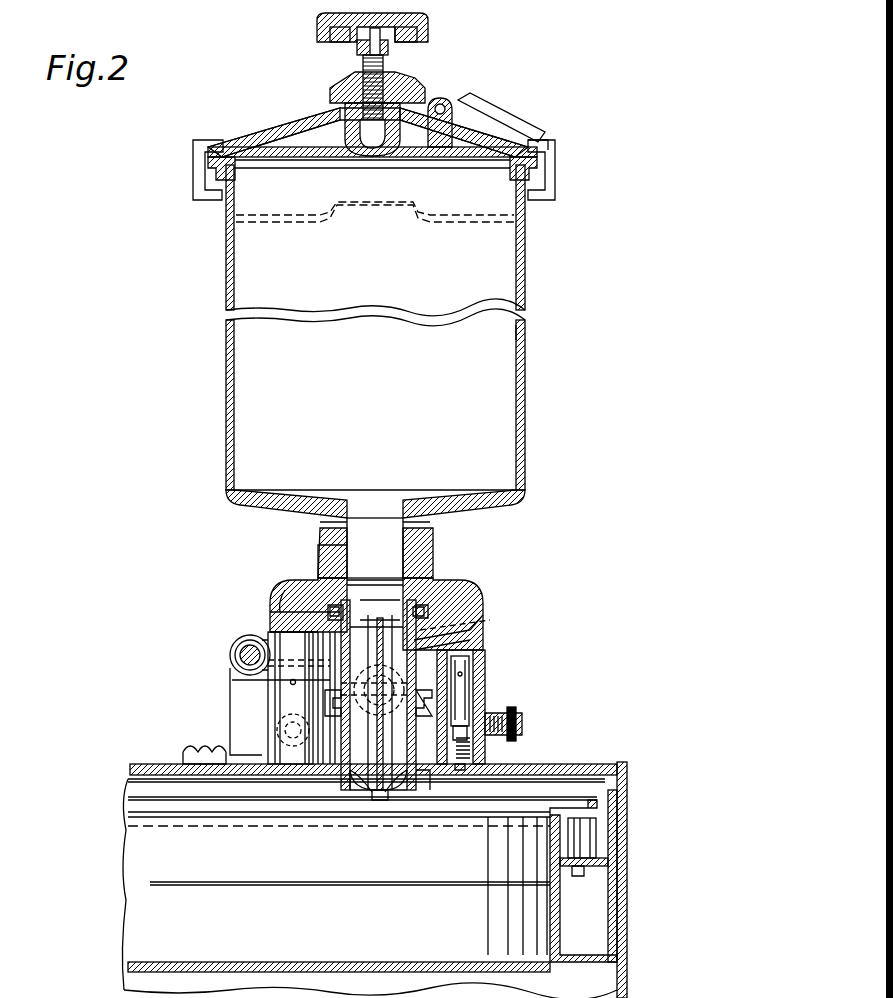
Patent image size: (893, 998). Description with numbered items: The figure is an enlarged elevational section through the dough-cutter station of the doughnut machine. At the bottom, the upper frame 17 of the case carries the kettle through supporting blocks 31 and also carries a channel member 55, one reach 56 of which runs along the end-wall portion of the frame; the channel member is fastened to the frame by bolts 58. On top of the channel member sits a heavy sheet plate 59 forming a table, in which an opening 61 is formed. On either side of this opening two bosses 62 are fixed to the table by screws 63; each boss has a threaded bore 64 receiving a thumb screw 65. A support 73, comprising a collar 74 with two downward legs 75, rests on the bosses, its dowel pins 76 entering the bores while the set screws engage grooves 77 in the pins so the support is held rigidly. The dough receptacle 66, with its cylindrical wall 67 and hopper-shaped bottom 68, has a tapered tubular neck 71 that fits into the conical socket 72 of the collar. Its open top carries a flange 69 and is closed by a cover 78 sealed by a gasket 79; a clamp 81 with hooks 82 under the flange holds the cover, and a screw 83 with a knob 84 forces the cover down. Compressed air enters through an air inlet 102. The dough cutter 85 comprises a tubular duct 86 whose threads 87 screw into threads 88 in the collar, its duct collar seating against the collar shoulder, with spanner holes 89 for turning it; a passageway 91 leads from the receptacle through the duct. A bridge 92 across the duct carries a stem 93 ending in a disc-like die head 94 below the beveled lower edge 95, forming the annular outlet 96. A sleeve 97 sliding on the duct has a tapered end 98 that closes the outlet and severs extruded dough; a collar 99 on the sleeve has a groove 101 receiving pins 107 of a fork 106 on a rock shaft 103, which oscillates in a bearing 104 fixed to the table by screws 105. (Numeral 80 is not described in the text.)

The upper frame 17 is at (622, 915).
The supporting block 31 is at (585, 840).
The channel member 55 is at (618, 805).
The reach of channel member 56 is at (620, 848).
The bolt 58 is at (576, 878).
The plate (table) 59 is at (560, 764).
The opening 61 is at (332, 772).
The boss 62 is at (283, 707).
The screw 63 is at (458, 772).
The bore 64 is at (490, 705).
The thumb screw 65 is at (522, 722).
The dough receptacle 66 is at (526, 405).
The cylindrical wall 67 is at (527, 342).
The hopper-shaped bottom 68 is at (500, 508).
The flange 69 is at (540, 168).
The tapered tubular neck 71 is at (350, 535).
The conical socket 72 is at (320, 545).
The support 73 is at (428, 552).
The collar 74 is at (325, 558).
The leg 75 is at (280, 598).
The dowel pin 76 is at (483, 668).
The groove 77 is at (488, 748).
The cover 78 is at (470, 147).
The gasket 79 is at (530, 140).
The passage 80 is at (378, 580).
The clamp 81 is at (475, 108).
The hook 82 is at (203, 201).
The screw 83 is at (363, 60).
The handle or knob 84 is at (318, 30).
The dough cutter 85 is at (263, 637).
The tubular duct 86 is at (486, 615).
The threads / collar of duct 87 is at (406, 597).
The threads / shoulder of collar 88 is at (428, 606).
The hole 89 is at (290, 608).
The passageway 91 is at (436, 534).
The bridge 92 is at (278, 612).
The stem 93 is at (380, 795).
The die head 94 is at (400, 777).
The lower edge 95 is at (428, 772).
The outlet 96 is at (365, 780).
The sleeve 97 is at (315, 777).
The tapered end 98 is at (350, 772).
The collar 99 is at (420, 640).
The groove 101 is at (425, 668).
The air inlet 102 is at (441, 103).
The rock shaft 103 is at (262, 650).
The bearing 104 is at (243, 730).
The screw 105 is at (186, 752).
The fork 106 is at (320, 680).
The pin 107 is at (492, 623).